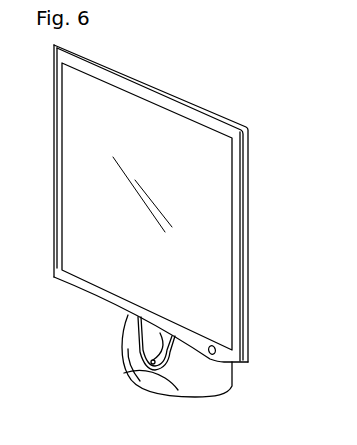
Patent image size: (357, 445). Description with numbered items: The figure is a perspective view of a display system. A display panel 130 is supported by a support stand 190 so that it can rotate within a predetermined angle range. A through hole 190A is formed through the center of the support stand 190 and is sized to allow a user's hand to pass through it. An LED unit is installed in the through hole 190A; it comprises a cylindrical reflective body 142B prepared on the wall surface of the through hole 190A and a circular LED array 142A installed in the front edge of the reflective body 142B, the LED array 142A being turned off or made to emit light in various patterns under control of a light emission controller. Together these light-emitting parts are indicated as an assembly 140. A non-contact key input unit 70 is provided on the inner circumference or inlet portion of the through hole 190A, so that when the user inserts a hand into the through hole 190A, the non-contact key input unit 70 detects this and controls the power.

The display panel 130 is at (243, 320).
The supporting member (neck) 140 is at (73, 355).
The circular LED array 142A is at (140, 345).
The cylindrical reflective body 142B is at (124, 373).
The non-contact key input unit 70 is at (150, 367).
The support stand 190 is at (212, 386).
The through hole 190A is at (174, 382).